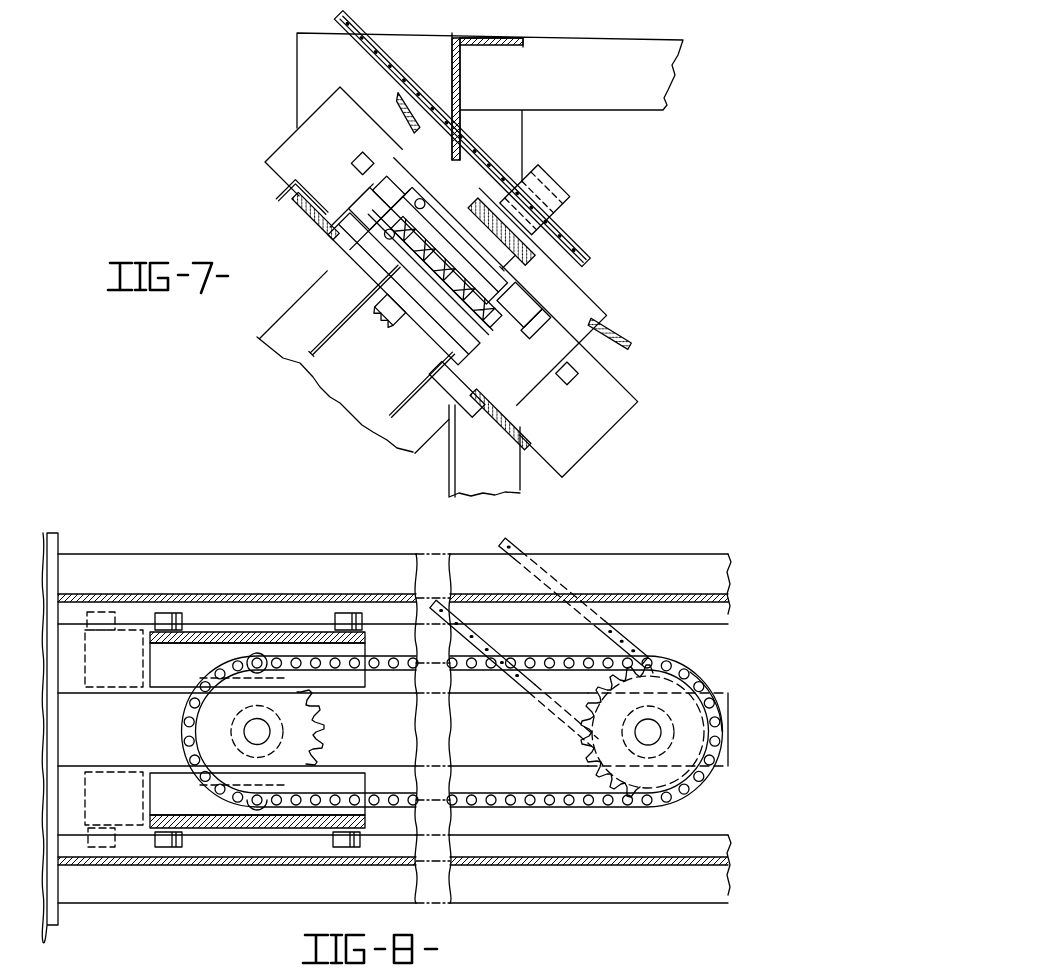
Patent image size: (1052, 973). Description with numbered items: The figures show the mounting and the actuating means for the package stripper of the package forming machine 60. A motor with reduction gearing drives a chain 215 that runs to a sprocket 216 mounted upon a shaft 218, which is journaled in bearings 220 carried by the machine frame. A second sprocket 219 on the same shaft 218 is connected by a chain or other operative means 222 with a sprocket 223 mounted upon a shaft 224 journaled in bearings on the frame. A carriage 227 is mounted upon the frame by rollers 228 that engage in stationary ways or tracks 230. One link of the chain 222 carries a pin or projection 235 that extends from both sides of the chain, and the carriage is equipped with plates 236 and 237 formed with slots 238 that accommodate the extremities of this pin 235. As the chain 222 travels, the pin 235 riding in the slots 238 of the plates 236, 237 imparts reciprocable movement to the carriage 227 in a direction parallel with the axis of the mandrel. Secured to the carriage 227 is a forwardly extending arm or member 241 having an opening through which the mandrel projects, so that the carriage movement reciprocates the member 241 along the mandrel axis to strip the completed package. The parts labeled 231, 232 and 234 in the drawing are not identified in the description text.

In FIG. 7, the package forming machine 60 is at (442, 481).
In FIG. 7, the chain 215 is at (360, 18).
In FIG. 8, the chain 215 is at (633, 650).
In FIG. 7, the sprocket 216 is at (580, 252).
In FIG. 8, the sprocket 216 is at (694, 672).
In FIG. 7, the shaft 218 is at (556, 186).
In FIG. 8, the shaft 218 is at (650, 731).
In FIG. 8, the sprocket 219 is at (590, 760).
In FIG. 7, the bearings 220 is at (500, 268).
In FIG. 7, the chain 222 is at (418, 248).
In FIG. 8, the chain 222 is at (572, 660).
In FIG. 7, the sprocket 223 is at (400, 297).
In FIG. 8, the sprocket 223 is at (325, 712).
In FIG. 8, the shaft 224 is at (257, 731).
In FIG. 7, the carriage 227 is at (424, 342).
In FIG. 8, the carriage 227 is at (233, 838).
In FIG. 7, the rollers 228 is at (357, 213).
In FIG. 8, the rollers 228 is at (172, 612).
In FIG. 7, the stationary ways or tracks 230 is at (300, 212).
In FIG. 7, the fastener 231 is at (365, 168).
In FIG. 7, the guide lip 232 is at (398, 166).
In FIG. 7, the guide lip 234 is at (590, 347).
In FIG. 7, the pin or projection 235 is at (420, 212).
In FIG. 8, the pin or projection 235 is at (266, 656).
In FIG. 7, the plate 236 is at (417, 203).
In FIG. 7, the plate 237 is at (390, 267).
In FIG. 7, the slots 238 is at (519, 299).
In FIG. 8, the slots 238 is at (215, 668).
In FIG. 7, the forwardly extending arm or member 241 is at (292, 318).